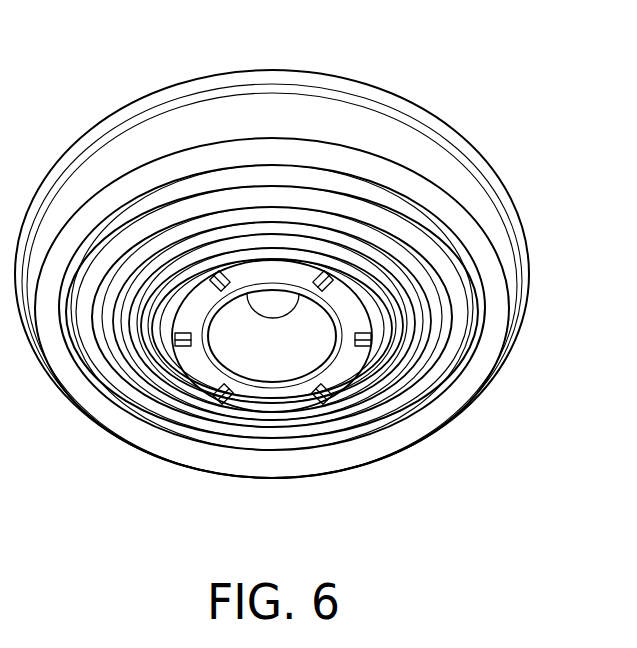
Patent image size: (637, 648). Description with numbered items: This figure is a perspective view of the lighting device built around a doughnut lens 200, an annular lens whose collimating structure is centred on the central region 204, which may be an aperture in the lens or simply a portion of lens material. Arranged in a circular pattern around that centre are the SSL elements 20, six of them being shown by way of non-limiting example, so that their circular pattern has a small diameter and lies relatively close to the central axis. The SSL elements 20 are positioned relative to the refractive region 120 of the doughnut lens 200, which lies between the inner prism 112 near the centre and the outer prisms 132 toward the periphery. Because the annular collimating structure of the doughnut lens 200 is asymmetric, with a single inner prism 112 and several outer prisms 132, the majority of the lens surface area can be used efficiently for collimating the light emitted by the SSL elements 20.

The doughnut lens 200 is at (524, 100).
The SSL elements 20 is at (327, 277).
The refractive region 120 is at (367, 293).
The central region 204 is at (273, 303).
The outer prisms 132 is at (72, 335).
The inner prism 112 is at (253, 360).